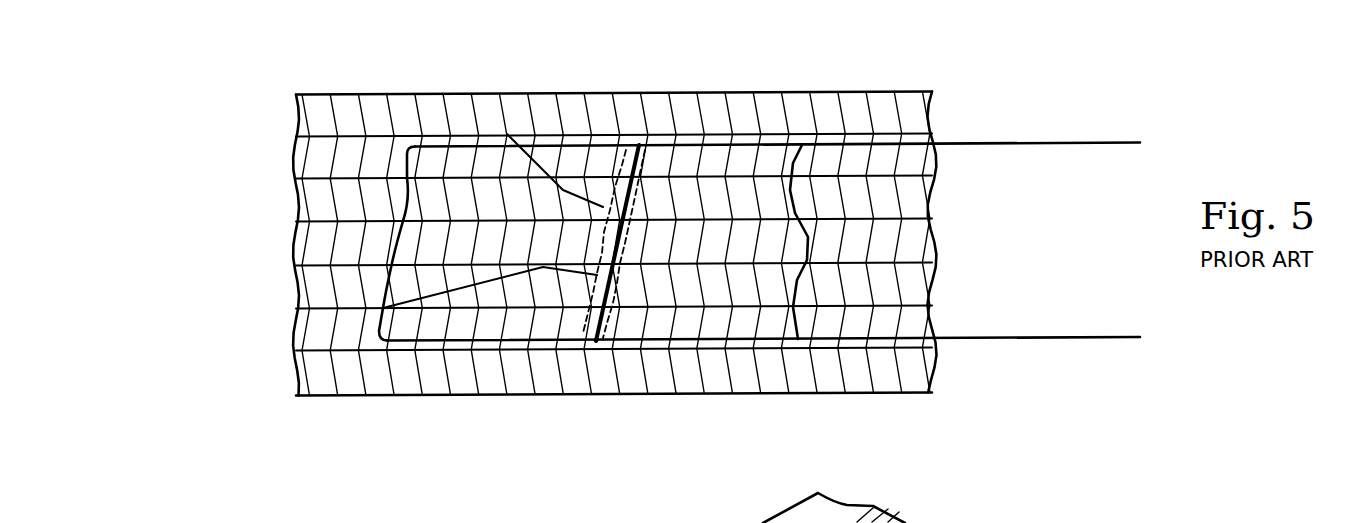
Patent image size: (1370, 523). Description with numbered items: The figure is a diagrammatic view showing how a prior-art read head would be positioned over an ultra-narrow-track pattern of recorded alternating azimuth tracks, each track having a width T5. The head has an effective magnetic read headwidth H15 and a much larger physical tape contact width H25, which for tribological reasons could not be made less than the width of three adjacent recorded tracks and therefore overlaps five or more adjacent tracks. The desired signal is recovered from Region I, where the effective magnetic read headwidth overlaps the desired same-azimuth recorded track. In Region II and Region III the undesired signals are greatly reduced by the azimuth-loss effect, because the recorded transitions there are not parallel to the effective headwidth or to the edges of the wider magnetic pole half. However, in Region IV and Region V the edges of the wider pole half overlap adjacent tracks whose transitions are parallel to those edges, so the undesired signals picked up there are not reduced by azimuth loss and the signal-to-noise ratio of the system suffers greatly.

The Region I is at (586, 230).
The Region II is at (595, 177).
The Region III is at (580, 295).
The Region IV is at (612, 139).
The Region V is at (570, 345).
The effective magnetic read headwidth H15 is at (800, 206).
The physical tape contact width H25 is at (1133, 338).
The recorded track width T5 is at (1001, 177).